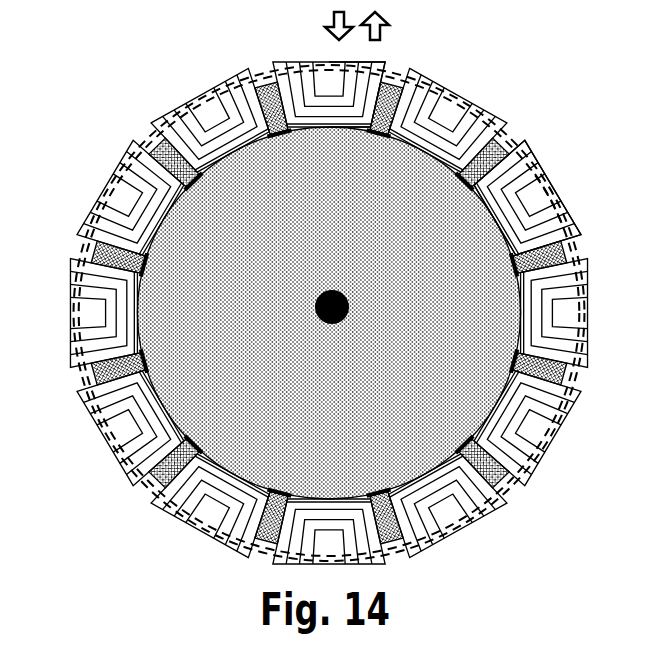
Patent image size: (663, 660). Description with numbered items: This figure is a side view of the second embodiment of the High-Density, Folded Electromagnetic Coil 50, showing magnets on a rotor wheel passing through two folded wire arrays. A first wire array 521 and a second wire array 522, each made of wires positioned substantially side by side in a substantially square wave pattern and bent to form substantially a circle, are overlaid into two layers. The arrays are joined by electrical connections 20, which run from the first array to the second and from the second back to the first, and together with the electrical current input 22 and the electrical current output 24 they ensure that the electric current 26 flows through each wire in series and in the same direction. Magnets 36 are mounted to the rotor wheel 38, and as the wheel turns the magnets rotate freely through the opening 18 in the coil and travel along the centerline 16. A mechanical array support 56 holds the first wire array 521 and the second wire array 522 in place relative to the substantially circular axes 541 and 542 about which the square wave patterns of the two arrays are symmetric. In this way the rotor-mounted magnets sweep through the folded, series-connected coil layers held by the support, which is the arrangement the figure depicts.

The High-Density, Folded Electromagnetic Coil (HD-FEC) 50 is at (324, 294).
The centerline 16 is at (148, 133).
The opening 18 is at (130, 195).
The electrical connections 20 is at (383, 58).
The electrical current input 22 is at (270, 27).
The electrical current output 24 is at (455, 27).
The electric current 26 is at (547, 130).
The magnets 36 is at (170, 160).
The rotor wheel 38 is at (207, 262).
The first wire array 521 is at (332, 134).
The second wire array 522 is at (347, 128).
The substantially circular axis 541 is at (545, 193).
The substantially circular axis 542 is at (552, 173).
The mechanical array support 56 is at (562, 197).